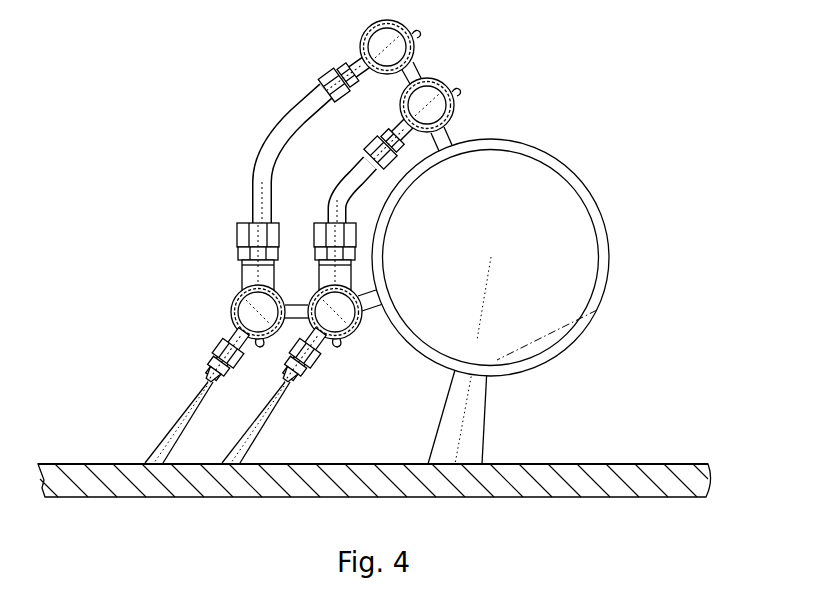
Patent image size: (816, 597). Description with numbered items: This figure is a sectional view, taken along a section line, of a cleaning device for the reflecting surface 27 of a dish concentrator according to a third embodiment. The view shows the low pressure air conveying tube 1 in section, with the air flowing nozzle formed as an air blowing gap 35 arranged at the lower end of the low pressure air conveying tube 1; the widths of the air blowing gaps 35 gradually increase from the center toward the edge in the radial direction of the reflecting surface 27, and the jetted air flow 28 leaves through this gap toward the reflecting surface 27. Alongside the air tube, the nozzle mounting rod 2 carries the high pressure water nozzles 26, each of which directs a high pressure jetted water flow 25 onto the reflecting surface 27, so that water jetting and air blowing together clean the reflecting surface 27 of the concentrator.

The low pressure air conveying tube 1 is at (610, 223).
The nozzle mounting rod 2 is at (313, 297).
The high pressure jetted water flow 25 is at (180, 430).
The high pressure water nozzle 26 is at (213, 345).
The reflecting surface of a concentrator 27 is at (135, 460).
The jetted air flow 28 is at (483, 447).
The air blowing gap 35 is at (597, 310).